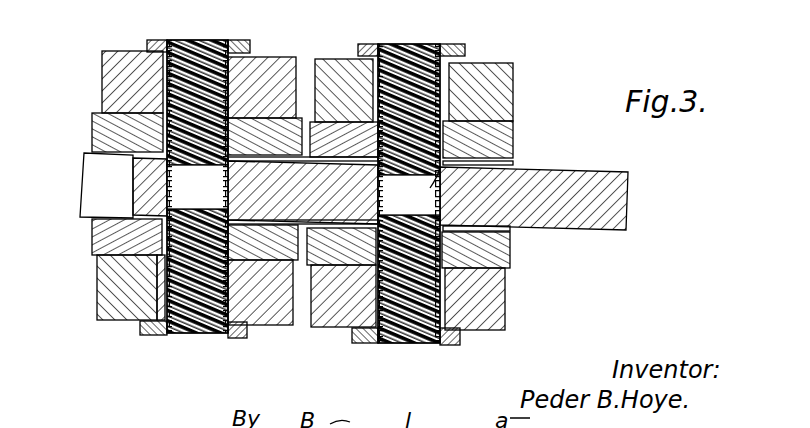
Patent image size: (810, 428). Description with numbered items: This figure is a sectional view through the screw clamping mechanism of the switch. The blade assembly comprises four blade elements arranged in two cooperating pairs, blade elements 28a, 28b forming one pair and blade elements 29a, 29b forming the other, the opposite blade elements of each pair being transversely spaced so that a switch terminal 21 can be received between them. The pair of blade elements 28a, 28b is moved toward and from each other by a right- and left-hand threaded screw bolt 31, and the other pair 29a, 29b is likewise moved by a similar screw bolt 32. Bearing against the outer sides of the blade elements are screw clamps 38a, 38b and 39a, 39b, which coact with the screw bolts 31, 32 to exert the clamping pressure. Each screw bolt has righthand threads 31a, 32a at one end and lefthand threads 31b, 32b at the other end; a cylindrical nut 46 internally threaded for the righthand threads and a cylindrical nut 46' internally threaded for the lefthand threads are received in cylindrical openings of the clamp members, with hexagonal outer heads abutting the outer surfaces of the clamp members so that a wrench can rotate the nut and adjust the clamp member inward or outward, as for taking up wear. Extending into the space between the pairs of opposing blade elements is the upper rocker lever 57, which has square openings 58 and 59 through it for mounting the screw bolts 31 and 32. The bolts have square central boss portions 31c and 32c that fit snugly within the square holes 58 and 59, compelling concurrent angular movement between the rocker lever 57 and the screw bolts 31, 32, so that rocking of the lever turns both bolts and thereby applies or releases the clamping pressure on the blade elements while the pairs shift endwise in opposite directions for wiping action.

The switch terminal 21 is at (84, 181).
The upper rocker lever 57 is at (628, 192).
The square opening 58 is at (166, 193).
The square opening 59 is at (530, 226).
The screw bolt 31 is at (160, 187).
The righthand threads 31a is at (190, 334).
The lefthand threads 31b is at (190, 42).
The square central boss portion 31c is at (187, 183).
The screw bolt 32 is at (456, 193).
The righthand threads 32a is at (387, 336).
The lefthand threads 32b is at (400, 52).
The square central boss portion 32c is at (500, 168).
The cylindrical nut 46 is at (308, 346).
The cylindrical nut 46' is at (312, 35).
The blade element 28a is at (97, 243).
The blade element 28b is at (92, 129).
The screw clamp 38a is at (100, 310).
The screw clamp 38b is at (113, 62).
The blade element 29a is at (512, 270).
The blade element 29b is at (515, 133).
The screw clamp 39a is at (507, 327).
The screw clamp 39b is at (512, 72).